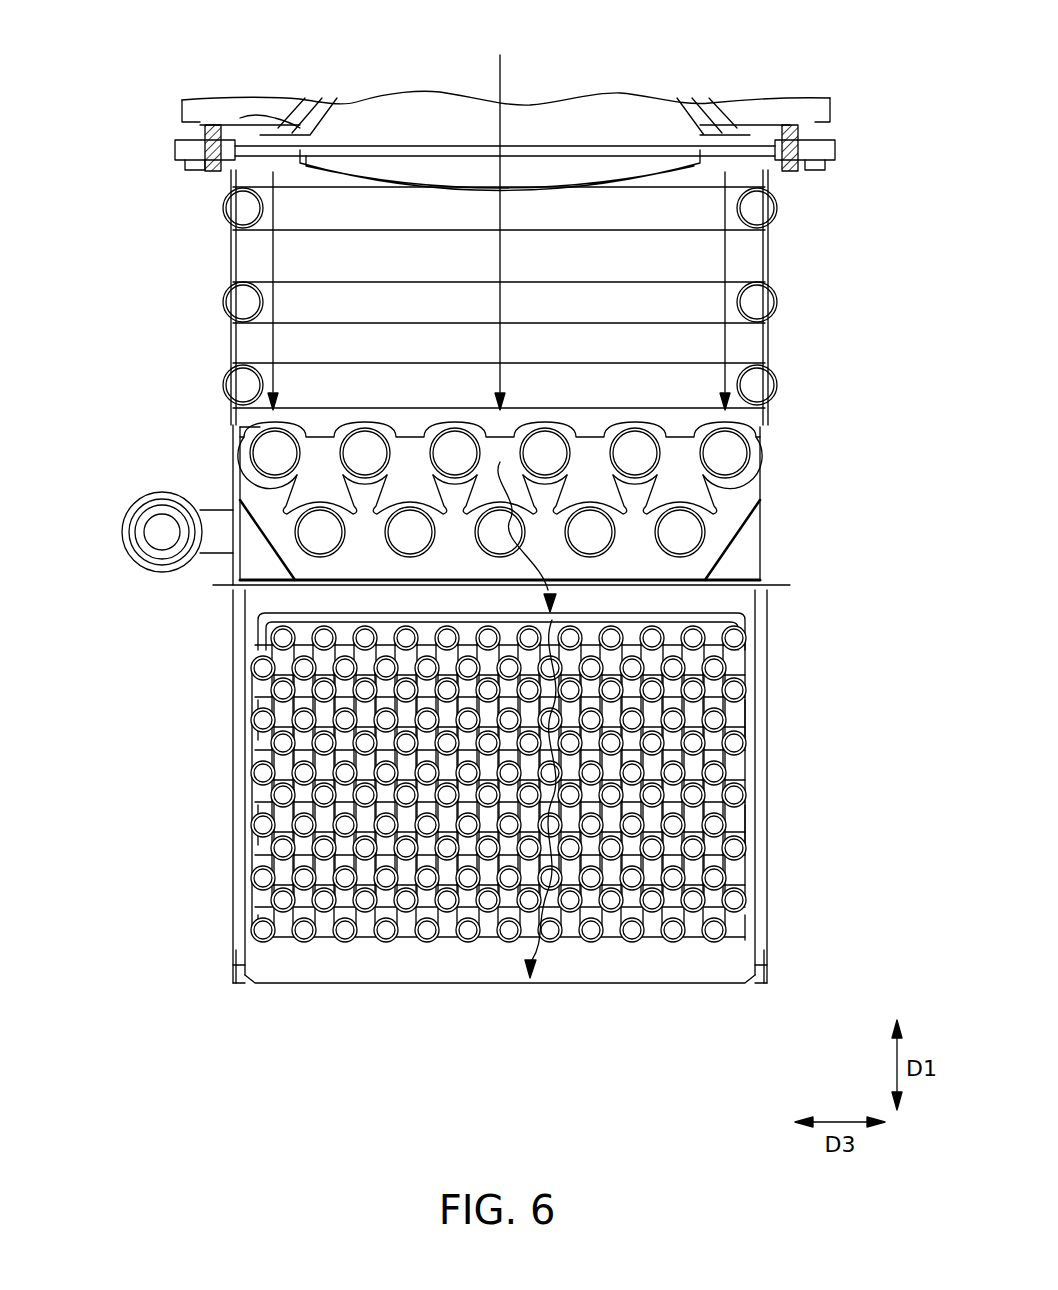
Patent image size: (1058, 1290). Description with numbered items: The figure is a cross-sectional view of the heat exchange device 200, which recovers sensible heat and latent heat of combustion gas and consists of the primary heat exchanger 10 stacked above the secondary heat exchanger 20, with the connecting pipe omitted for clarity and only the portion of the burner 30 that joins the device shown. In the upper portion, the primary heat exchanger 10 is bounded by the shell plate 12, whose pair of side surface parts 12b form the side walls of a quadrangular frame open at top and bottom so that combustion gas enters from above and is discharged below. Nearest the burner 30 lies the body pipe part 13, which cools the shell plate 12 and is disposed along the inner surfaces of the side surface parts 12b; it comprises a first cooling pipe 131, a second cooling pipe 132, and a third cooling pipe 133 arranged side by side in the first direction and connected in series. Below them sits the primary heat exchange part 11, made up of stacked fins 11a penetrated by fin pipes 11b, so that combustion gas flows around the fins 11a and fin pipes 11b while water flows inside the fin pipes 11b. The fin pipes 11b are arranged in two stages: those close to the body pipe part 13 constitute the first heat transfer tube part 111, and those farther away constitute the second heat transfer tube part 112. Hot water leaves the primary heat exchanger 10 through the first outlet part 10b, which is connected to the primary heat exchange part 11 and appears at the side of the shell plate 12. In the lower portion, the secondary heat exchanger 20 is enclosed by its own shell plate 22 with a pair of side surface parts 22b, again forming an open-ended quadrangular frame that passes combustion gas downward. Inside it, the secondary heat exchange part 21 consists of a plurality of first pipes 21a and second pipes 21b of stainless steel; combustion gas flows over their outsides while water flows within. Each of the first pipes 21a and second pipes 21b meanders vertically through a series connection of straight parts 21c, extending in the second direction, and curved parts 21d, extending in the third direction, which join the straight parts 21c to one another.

The heat exchange device 200 is at (832, 86).
The primary heat exchanger 10 is at (742, 142).
The first outlet part 10b is at (122, 535).
The primary heat exchange part 11 is at (530, 332).
The fin 11a is at (740, 493).
The fin pipe 11b is at (752, 452).
The first heat transfer tube part 111 is at (632, 428).
The second heat transfer tube part 112 is at (583, 500).
The shell plate 12 is at (282, 170).
The side surface part 12b is at (240, 462).
The body pipe part 13 is at (150, 195).
The first cooling pipe 131 is at (224, 210).
The second cooling pipe 132 is at (224, 304).
The third cooling pipe 133 is at (224, 387).
The burner 30 is at (712, 135).
The secondary heat exchanger 20 is at (742, 598).
The secondary heat exchange part 21 is at (520, 769).
The first pipe 21a is at (272, 652).
The second pipe 21b is at (262, 682).
The straight part 21c is at (745, 624).
The curved part 21d is at (740, 662).
The shell plate 22 is at (258, 620).
The side surface part 22b is at (233, 975).